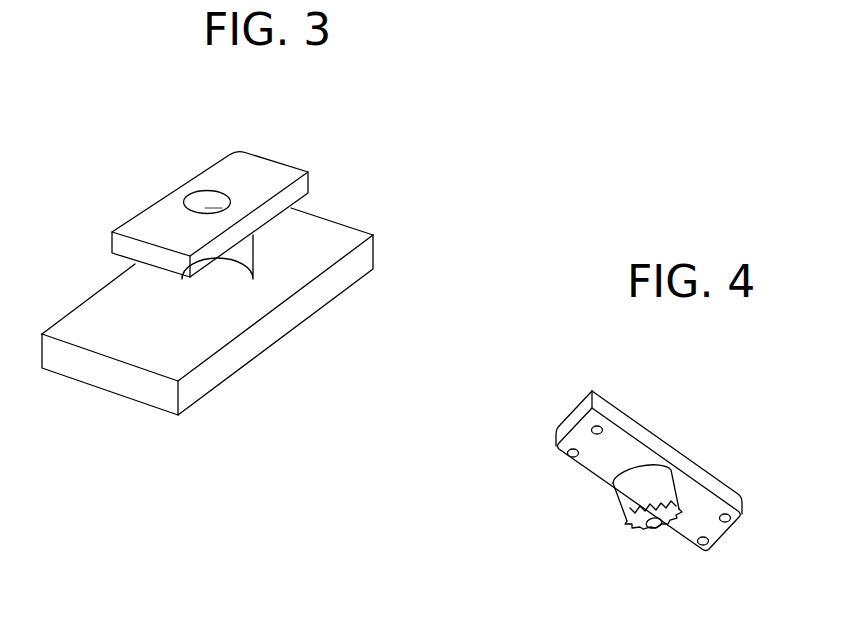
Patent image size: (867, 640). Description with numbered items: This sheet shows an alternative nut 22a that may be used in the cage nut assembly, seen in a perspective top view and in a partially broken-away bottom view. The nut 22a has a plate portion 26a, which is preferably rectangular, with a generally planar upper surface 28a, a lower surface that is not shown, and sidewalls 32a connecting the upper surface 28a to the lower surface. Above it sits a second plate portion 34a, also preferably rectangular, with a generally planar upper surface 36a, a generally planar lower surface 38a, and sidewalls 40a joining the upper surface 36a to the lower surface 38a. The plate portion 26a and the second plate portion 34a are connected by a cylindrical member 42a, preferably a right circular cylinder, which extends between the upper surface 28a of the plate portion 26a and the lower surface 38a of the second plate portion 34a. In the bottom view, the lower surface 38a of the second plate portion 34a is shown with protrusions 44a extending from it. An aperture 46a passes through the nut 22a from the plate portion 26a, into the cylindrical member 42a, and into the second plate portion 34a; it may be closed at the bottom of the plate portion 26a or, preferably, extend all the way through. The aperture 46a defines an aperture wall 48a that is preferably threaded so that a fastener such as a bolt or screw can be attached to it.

In FIG. 3, the nut 22a is at (402, 207).
In FIG. 4, the nut 22a is at (703, 422).
In FIG. 3, the plate portion 26a is at (253, 333).
In FIG. 3, the upper surface 28a is at (320, 233).
In FIG. 3, the sidewalls 32a is at (322, 293).
In FIG. 3, the second plate portion 34a is at (263, 178).
In FIG. 4, the second plate portion 34a is at (622, 412).
In FIG. 3, the upper surface 36a is at (170, 203).
In FIG. 4, the lower surface 38a is at (590, 468).
In FIG. 3, the sidewalls 40a is at (310, 183).
In FIG. 4, the sidewalls 40a is at (578, 408).
In FIG. 3, the cylindrical member 42a is at (216, 278).
In FIG. 4, the cylindrical member 42a is at (650, 487).
In FIG. 4, the protrusions 44a is at (598, 428).
In FIG. 3, the aperture 46a is at (205, 205).
In FIG. 4, the aperture 46a is at (636, 531).
In FIG. 3, the aperture wall 48a is at (220, 205).
In FIG. 4, the aperture wall 48a is at (652, 532).